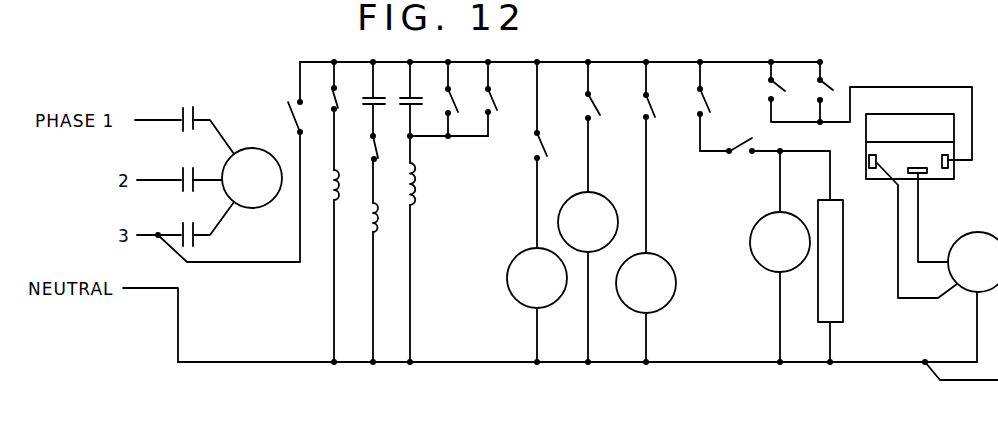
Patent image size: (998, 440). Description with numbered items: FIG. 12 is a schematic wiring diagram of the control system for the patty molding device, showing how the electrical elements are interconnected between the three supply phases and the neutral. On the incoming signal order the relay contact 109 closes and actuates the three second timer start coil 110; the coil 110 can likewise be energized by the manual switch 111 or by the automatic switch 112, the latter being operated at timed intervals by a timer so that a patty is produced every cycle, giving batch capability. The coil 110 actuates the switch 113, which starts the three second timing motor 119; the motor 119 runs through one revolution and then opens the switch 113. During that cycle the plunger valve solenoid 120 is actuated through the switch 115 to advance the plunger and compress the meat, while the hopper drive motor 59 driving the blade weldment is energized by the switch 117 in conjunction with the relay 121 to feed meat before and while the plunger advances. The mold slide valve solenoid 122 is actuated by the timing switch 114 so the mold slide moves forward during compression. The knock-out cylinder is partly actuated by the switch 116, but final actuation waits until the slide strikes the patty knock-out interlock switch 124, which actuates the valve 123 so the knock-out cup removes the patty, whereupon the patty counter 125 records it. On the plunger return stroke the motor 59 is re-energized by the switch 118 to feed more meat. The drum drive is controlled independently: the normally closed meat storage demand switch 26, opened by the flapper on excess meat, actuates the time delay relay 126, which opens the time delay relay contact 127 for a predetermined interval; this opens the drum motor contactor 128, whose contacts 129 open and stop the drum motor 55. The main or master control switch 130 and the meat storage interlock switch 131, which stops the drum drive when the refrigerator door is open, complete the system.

The drum motor 55 is at (262, 187).
The contacts 129 is at (196, 112).
The main or master control switch 130 is at (290, 98).
The meat storage demand switch 26 is at (339, 103).
The time delay relay contact 127 is at (380, 97).
The meat storage interlock switch 131 is at (379, 152).
The relay contact 109 is at (414, 97).
The manual switch 111 is at (455, 116).
The automatic switch 112 is at (492, 120).
The time delay relay 126 is at (333, 187).
The drum motor contactor 128 is at (371, 217).
The three second timer start coil 110 is at (418, 194).
The switch 113 is at (546, 150).
The timing switch 114 is at (595, 115).
The switch 115 is at (653, 119).
The switch 116 is at (705, 100).
The patty knock-out interlock switch 124 is at (740, 155).
The switch 117 is at (790, 85).
The switch 118 is at (831, 88).
The three second timing motor 119 is at (552, 287).
The mold slide valve solenoid 122 is at (603, 231).
The plunger valve solenoid 120 is at (661, 292).
The valve 123 is at (795, 251).
The patty counter 125 is at (834, 294).
The relay 121 is at (914, 140).
The hopper drive motor 59 is at (988, 271).